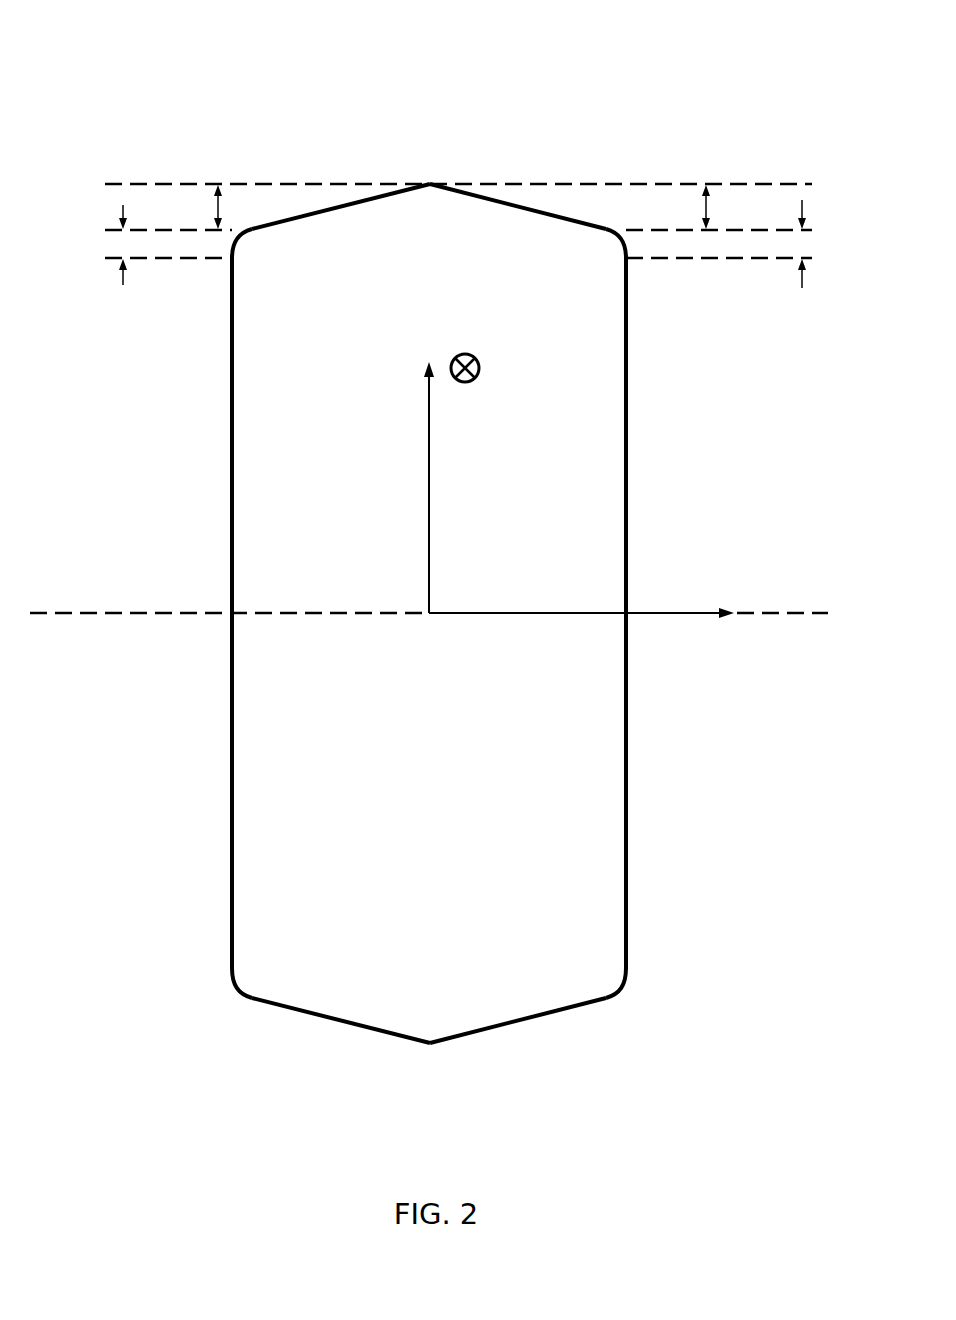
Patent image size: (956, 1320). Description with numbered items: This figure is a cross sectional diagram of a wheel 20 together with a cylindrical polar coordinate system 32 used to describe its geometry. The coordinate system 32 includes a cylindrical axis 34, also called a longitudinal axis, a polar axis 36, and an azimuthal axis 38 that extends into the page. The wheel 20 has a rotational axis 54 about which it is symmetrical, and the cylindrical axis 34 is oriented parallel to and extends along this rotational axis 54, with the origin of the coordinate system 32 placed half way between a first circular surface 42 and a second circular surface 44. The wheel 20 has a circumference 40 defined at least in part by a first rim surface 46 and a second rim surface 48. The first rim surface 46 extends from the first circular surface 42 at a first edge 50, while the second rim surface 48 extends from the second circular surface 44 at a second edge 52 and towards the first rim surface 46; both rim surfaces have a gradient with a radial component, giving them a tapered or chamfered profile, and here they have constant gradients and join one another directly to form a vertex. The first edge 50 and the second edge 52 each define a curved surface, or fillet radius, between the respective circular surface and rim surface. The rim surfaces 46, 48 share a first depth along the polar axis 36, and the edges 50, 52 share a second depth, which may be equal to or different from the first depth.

The wheel 20 is at (716, 104).
The cylindrical polar coordinate system 32 is at (388, 512).
The cylindrical axis 34 is at (678, 617).
The polar axis 36 is at (431, 411).
The azimuthal axis 38 is at (480, 362).
The circumference 40 is at (438, 98).
The first circular surface 42 is at (231, 432).
The second circular surface 44 is at (627, 393).
The first rim surface 46 is at (348, 209).
The second rim surface 48 is at (533, 213).
The first edge 50 is at (246, 240).
The second edge 52 is at (612, 243).
The rotational axis 54 is at (135, 615).